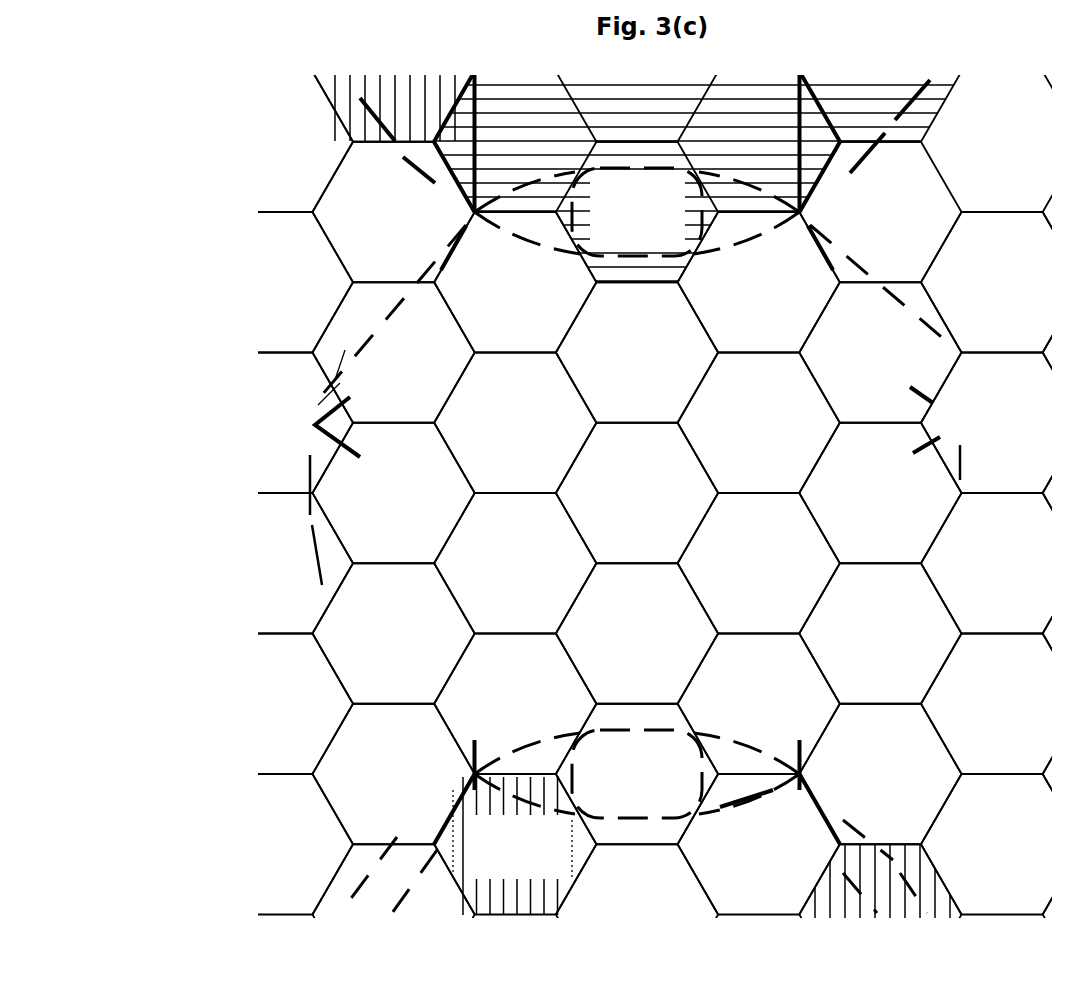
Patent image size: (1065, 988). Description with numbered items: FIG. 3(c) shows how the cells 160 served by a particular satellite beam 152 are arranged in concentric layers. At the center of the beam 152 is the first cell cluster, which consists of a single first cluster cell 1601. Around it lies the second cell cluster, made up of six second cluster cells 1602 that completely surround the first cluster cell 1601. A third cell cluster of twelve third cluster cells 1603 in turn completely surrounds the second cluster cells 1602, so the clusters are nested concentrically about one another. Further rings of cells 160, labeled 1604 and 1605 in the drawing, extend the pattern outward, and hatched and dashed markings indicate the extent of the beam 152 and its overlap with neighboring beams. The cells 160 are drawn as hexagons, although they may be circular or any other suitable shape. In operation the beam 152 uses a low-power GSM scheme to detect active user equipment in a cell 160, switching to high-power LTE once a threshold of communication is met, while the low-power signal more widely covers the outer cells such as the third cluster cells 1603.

The beam 152 is at (330, 383).
The cells 160 is at (628, 493).
The first cluster cell 1601 is at (637, 493).
The second cluster cells 1602 is at (637, 493).
The third cluster cells 1603 is at (637, 493).
The third-ring hexagonal cells (160 sub 4) 1604 is at (628, 563).
The outer hexagonal cell (160 sub 5) 1605 is at (993, 844).